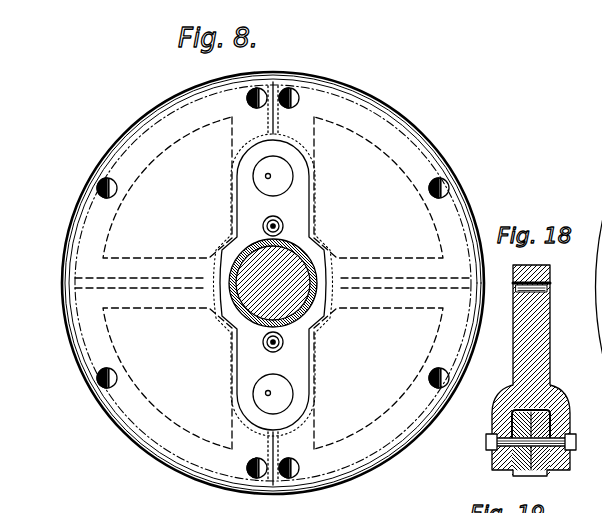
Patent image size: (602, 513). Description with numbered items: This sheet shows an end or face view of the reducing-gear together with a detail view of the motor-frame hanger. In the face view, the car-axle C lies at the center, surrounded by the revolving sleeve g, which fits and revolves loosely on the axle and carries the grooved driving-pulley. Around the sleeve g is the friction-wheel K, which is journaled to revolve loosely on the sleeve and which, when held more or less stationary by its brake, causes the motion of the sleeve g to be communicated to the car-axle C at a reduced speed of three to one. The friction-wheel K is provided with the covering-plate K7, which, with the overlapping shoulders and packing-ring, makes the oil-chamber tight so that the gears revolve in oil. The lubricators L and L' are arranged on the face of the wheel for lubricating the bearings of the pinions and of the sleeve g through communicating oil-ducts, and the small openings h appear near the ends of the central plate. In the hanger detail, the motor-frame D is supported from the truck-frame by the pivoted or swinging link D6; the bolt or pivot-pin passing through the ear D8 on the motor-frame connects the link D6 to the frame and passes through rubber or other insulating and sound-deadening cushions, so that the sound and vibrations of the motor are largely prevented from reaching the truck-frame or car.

In FIG. 8, the friction-wheel K is at (445, 154).
In FIG. 8, the covering-plate K7 is at (273, 283).
In FIG. 8, the holes h is at (277, 172).
In FIG. 8, the lubricator L is at (234, 219).
In FIG. 8, the lubricator L' is at (303, 341).
In FIG. 8, the revolving sleeve g is at (308, 263).
In FIG. 8, the car-axle C is at (273, 283).
In FIG. 18, the pivoted link D6 is at (551, 355).
In FIG. 18, the ear D8 is at (533, 474).
In FIG. 18, the motor-frame D is at (577, 449).